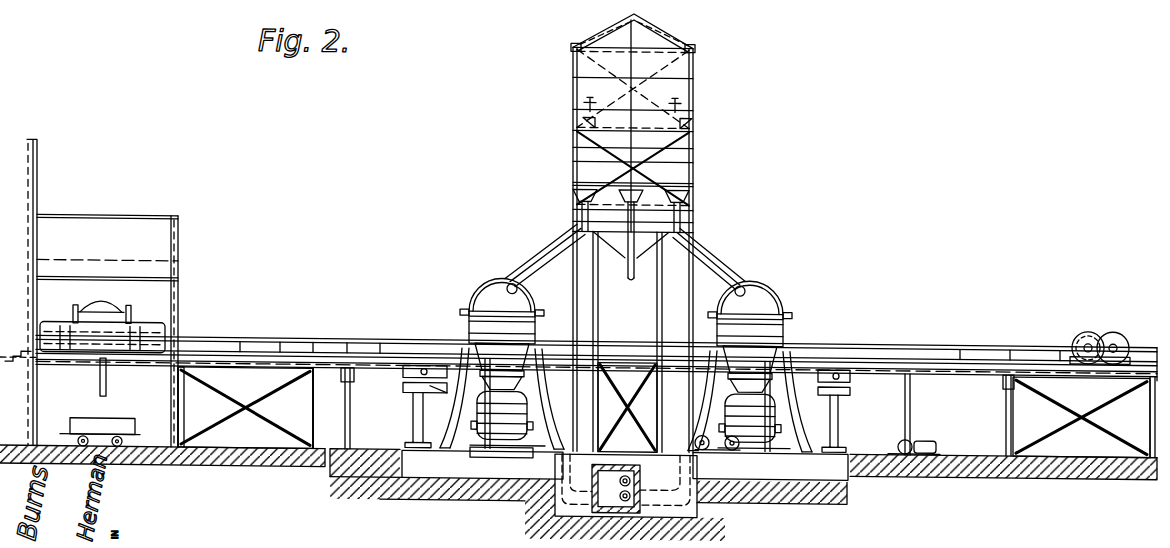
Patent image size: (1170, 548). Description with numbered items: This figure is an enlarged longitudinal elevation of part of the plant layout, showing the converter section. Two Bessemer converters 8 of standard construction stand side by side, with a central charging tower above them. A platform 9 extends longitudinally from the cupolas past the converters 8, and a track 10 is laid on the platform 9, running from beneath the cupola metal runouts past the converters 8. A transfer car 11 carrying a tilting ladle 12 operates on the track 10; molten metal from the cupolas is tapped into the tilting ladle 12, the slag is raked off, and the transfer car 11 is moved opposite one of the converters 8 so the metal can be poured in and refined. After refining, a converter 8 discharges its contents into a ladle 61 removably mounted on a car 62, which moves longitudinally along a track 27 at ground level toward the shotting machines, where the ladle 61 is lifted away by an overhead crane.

The Bessemer converter 8 is at (492, 304).
The platform 9 is at (235, 364).
The track 10 is at (293, 364).
The transfer car 11 is at (147, 324).
The tilting ladle 12 is at (97, 311).
The track 27 is at (612, 452).
The ladle 61 is at (507, 430).
The car 62 is at (475, 440).